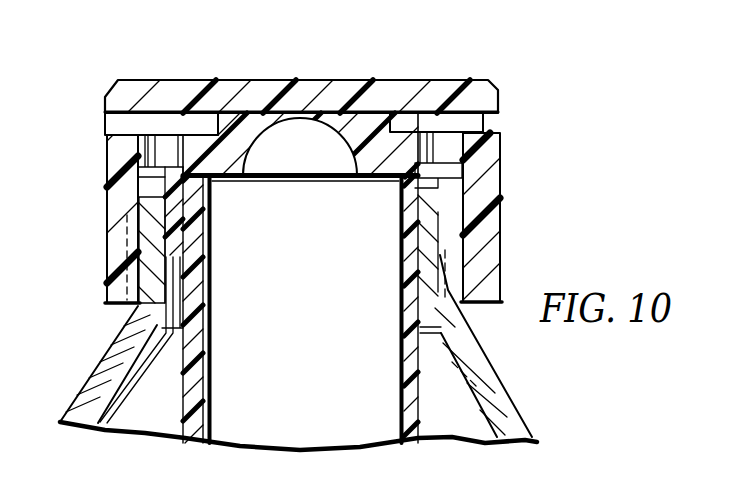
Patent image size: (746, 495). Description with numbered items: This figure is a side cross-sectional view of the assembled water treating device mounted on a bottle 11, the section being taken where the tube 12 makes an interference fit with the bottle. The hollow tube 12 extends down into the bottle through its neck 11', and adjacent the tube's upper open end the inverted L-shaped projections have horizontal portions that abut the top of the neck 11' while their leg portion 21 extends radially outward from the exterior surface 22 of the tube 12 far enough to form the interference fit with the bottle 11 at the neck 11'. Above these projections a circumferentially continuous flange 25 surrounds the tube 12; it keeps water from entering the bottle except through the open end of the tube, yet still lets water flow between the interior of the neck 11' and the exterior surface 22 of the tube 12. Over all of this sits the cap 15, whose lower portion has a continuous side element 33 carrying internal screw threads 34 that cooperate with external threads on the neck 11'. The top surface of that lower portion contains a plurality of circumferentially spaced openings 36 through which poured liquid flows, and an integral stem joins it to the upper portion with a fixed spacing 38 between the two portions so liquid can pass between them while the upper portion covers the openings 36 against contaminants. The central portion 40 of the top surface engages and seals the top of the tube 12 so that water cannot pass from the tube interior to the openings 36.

The bottle 11 is at (480, 346).
The neck 11' is at (108, 364).
The tube 12 is at (68, 125).
The cap 15 is at (548, 54).
The leg portion 21 is at (423, 228).
The exterior surface 22 is at (419, 421).
The flange 25 is at (423, 193).
The continuous side element 33 is at (107, 223).
The internal screw threads 34 is at (125, 250).
The openings 36 is at (147, 137).
The fixed spacing 38 is at (477, 124).
The central portion of the top surface 40 is at (372, 162).